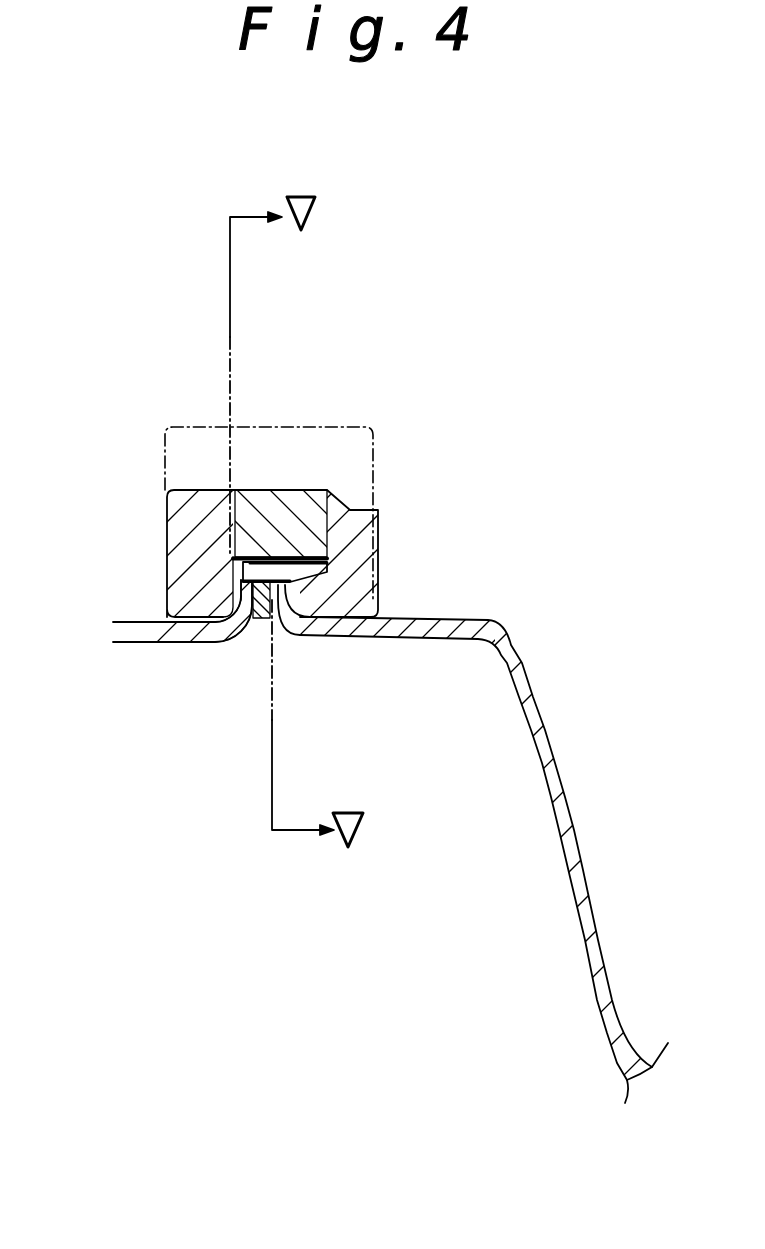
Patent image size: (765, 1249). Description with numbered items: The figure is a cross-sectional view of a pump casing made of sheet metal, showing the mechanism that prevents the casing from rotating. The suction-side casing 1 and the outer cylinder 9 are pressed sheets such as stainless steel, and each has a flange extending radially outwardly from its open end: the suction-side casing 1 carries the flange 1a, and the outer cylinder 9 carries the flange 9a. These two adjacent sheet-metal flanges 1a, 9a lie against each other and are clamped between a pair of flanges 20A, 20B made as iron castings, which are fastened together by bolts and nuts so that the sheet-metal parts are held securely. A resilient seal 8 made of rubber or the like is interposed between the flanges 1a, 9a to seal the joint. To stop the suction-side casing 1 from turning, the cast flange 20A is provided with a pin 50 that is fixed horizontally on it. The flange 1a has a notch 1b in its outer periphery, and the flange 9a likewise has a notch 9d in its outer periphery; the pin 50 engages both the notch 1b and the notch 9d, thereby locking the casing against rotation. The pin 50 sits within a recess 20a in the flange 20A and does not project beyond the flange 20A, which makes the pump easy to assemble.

The suction-side casing 1 is at (516, 639).
The flange of the suction-side casing 1a is at (310, 605).
The notch 1b is at (330, 565).
The resilient seal 8 is at (257, 622).
The outer cylinder 9 is at (140, 632).
The flange of the outer cylinder 9a is at (240, 580).
The notch 9d is at (247, 567).
The flange 20A is at (290, 495).
The flange 20B is at (187, 538).
The recess 20a is at (325, 560).
The pin 50 is at (240, 557).